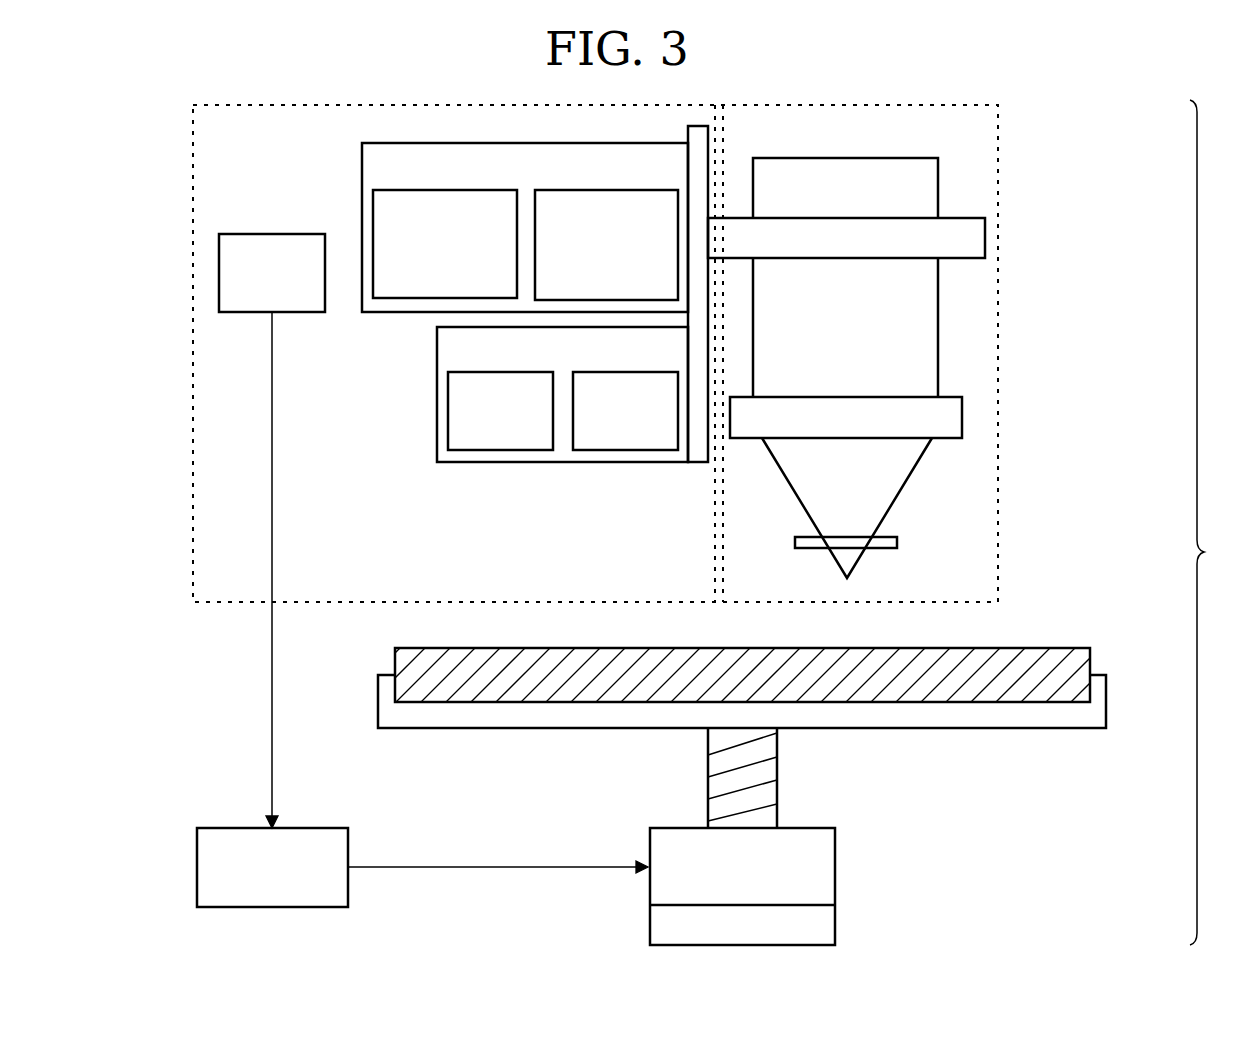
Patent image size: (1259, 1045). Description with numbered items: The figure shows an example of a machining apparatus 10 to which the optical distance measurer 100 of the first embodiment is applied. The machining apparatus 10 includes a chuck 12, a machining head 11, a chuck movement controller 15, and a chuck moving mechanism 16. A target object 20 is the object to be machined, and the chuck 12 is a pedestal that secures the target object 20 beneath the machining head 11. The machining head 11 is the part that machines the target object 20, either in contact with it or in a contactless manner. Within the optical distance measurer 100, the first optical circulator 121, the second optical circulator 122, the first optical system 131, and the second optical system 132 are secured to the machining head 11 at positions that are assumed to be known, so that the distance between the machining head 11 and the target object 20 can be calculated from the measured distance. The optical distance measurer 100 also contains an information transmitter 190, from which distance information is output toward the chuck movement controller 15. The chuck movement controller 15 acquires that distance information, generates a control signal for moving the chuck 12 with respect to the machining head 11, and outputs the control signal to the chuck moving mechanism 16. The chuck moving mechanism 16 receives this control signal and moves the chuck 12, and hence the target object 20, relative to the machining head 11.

The machining apparatus 10 is at (1223, 522).
The machining head 11 is at (998, 577).
The chuck 12 is at (1106, 700).
The chuck movement controller 15 is at (348, 836).
The chuck moving mechanism 16 is at (835, 853).
The target object 20 is at (1090, 653).
The optical distance measurer 100 is at (322, 105).
The first optical circulator 121 is at (465, 190).
The second optical circulator 122 is at (618, 190).
The first optical system 131 is at (513, 372).
The second optical system 132 is at (630, 372).
The information transmitter 190 is at (290, 234).